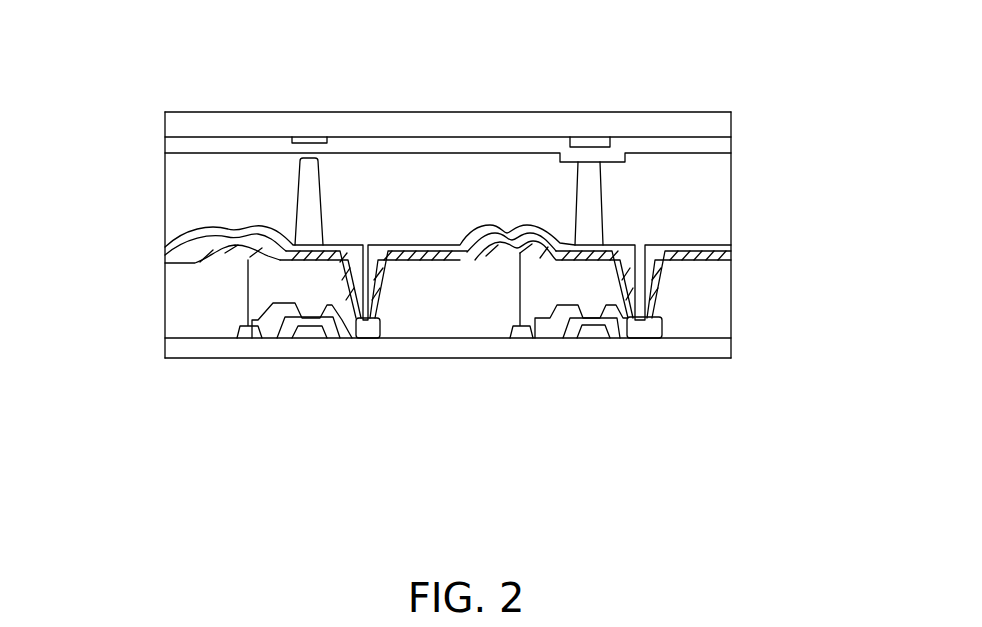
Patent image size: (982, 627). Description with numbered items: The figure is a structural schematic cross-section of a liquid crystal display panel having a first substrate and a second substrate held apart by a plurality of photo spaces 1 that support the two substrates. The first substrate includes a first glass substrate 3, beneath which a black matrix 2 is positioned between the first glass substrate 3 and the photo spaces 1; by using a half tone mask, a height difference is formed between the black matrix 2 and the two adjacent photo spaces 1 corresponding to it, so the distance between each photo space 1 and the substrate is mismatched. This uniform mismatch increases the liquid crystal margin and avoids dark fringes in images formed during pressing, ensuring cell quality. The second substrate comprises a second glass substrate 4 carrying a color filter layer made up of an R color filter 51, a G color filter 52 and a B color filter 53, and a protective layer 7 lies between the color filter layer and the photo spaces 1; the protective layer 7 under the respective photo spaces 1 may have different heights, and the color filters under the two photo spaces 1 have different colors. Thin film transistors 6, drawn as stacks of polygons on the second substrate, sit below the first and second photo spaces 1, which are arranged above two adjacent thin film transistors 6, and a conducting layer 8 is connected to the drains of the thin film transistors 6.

The photo space 1 is at (318, 198).
The black matrix 2 is at (318, 137).
The first glass substrate 3 is at (725, 123).
The second glass substrate 4 is at (717, 355).
The R color filter 51 is at (183, 312).
The G color filter 52 is at (327, 290).
The B color filter 53 is at (697, 258).
The thin film transistor 6 is at (302, 330).
The protective layer 7 is at (165, 255).
The conducting layer 8 is at (165, 247).